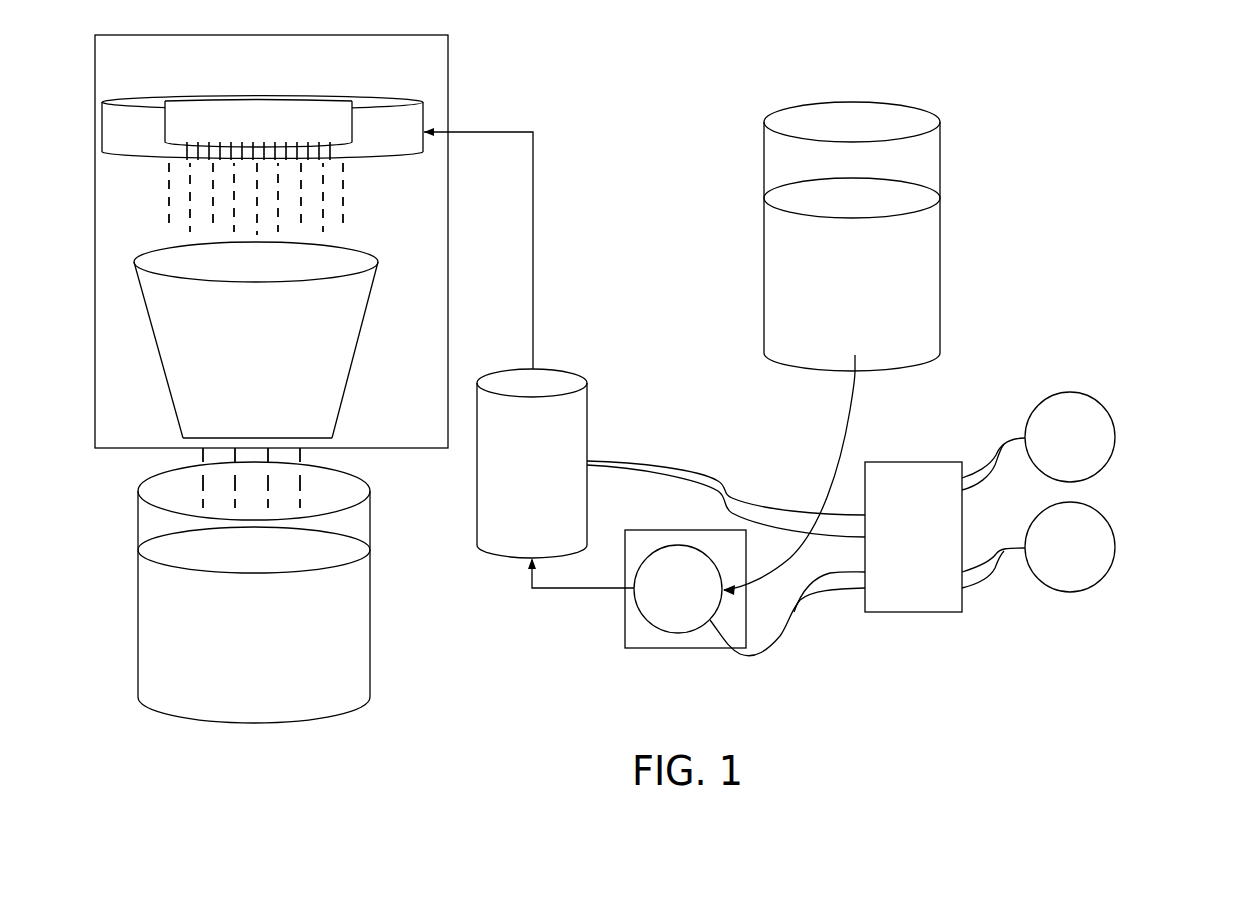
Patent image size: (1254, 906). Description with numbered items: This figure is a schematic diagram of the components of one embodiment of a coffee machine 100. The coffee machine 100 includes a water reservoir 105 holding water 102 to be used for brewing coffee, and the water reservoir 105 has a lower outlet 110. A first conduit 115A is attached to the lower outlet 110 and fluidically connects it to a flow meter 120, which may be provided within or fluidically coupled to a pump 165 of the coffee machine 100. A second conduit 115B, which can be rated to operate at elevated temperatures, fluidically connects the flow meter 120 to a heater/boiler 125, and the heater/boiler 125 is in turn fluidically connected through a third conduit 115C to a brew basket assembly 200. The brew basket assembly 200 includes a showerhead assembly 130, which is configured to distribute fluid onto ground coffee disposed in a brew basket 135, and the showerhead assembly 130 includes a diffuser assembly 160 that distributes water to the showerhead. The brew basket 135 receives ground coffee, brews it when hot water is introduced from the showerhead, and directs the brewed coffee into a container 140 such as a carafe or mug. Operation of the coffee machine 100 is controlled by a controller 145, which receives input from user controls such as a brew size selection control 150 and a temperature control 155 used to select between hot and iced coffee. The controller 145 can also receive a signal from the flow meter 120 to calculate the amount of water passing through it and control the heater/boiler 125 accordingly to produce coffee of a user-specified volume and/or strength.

The coffee machine 100 is at (1206, 111).
The water 102 is at (852, 226).
The water reservoir 105 is at (762, 168).
The lower outlet 110 is at (858, 385).
The first conduit 115A is at (831, 432).
The second conduit 115B is at (578, 600).
The third conduit 115C is at (547, 252).
The flow meter 120 is at (678, 589).
The heater/boiler 125 is at (532, 463).
The showerhead assembly 130 is at (403, 172).
The brew basket 135 is at (256, 340).
The container 140 is at (254, 585).
The controller 145 is at (806, 547).
The brew size selection control 150 is at (1070, 437).
The temperature control 155 is at (1070, 547).
The diffuser assembly 160 is at (326, 108).
The pump 165 is at (688, 660).
The brew basket assembly 200 is at (463, 76).